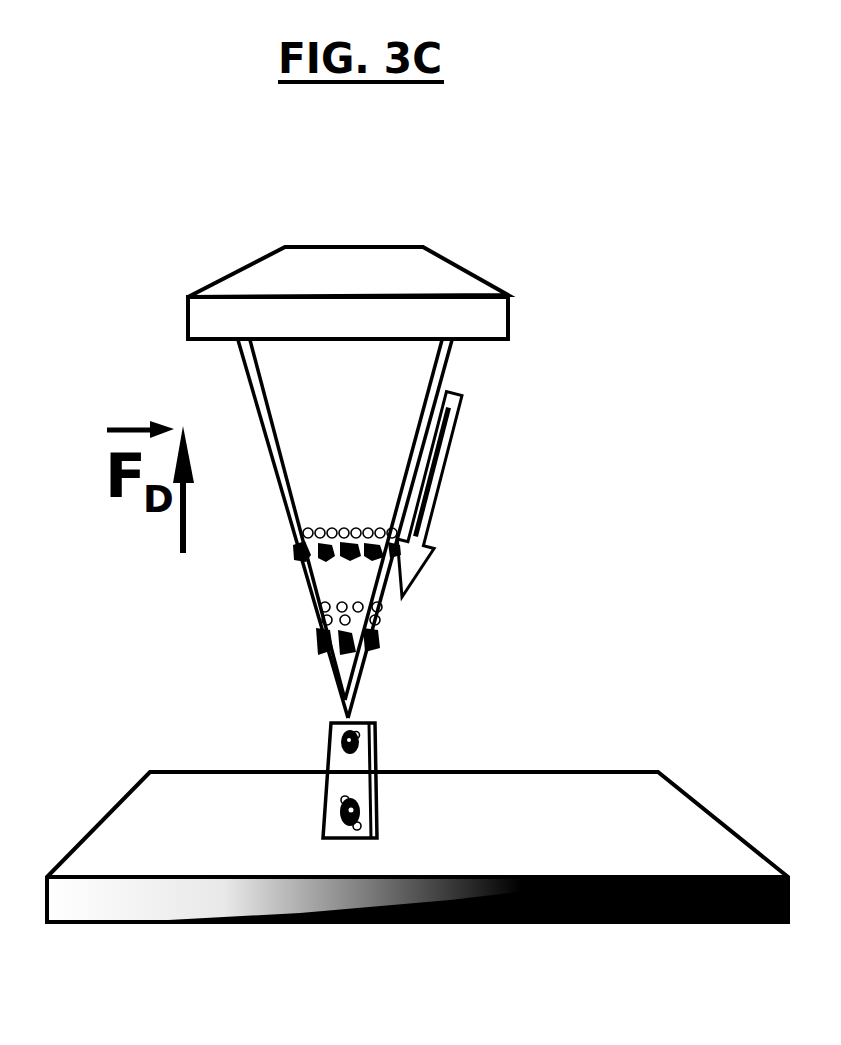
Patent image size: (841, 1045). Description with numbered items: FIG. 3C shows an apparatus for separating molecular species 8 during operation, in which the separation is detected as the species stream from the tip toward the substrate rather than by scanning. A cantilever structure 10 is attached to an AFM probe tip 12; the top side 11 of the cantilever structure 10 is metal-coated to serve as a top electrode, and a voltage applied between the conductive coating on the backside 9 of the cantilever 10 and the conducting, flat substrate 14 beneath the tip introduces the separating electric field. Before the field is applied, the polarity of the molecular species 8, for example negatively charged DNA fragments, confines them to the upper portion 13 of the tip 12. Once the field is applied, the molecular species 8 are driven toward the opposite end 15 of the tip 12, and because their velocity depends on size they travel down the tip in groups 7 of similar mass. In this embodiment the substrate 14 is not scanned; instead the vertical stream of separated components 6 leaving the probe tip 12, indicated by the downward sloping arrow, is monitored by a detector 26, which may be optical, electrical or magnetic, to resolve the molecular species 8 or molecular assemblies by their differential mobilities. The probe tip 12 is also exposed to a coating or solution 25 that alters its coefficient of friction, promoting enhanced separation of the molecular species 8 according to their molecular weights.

The separated components 6 is at (376, 727).
The groups of molecular species 7 is at (285, 532).
The molecular species 8 is at (387, 593).
The backside of the cantilever 9 is at (490, 342).
The cantilever structure 10 is at (363, 247).
The top side of the cantilever structure 11 is at (260, 278).
The AFM tip 12 is at (288, 493).
The upper portion of the tip 13 is at (285, 353).
The substrate 14 is at (620, 788).
The opposite end of the tip 15 is at (348, 575).
The coating or solution 25 is at (260, 414).
The detector 26 is at (325, 825).